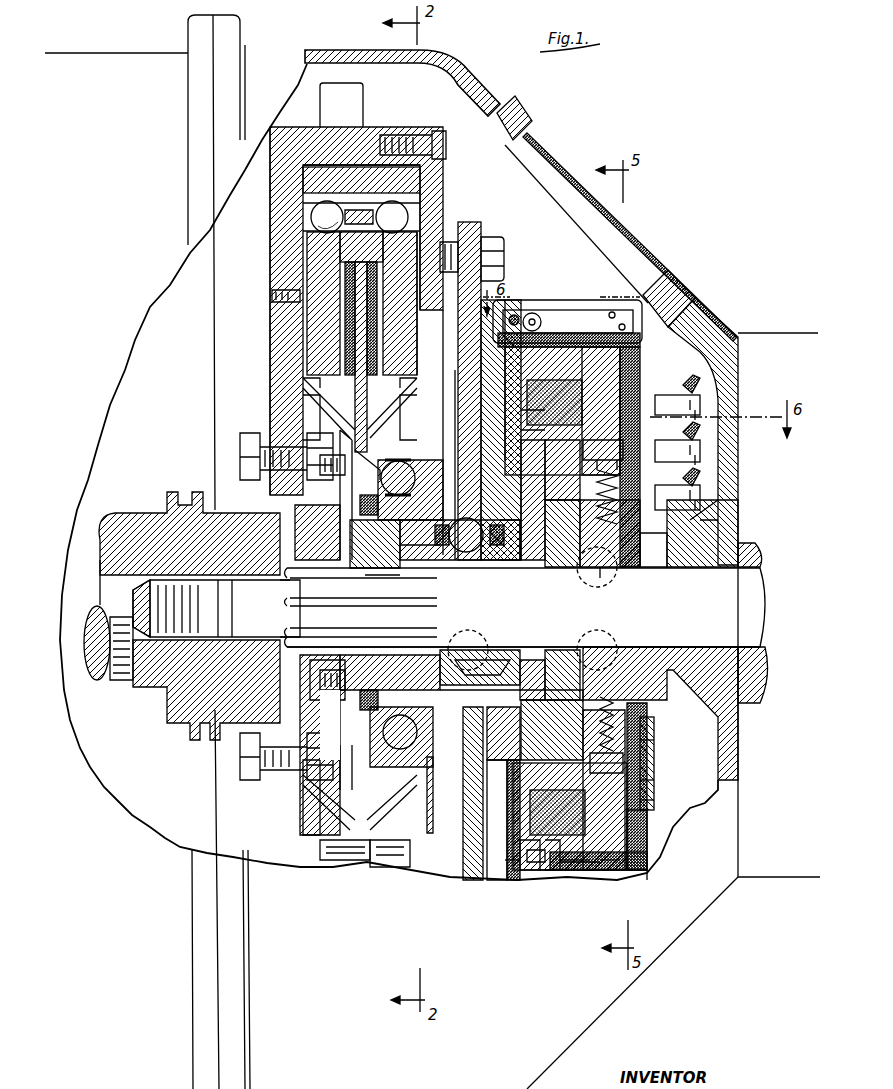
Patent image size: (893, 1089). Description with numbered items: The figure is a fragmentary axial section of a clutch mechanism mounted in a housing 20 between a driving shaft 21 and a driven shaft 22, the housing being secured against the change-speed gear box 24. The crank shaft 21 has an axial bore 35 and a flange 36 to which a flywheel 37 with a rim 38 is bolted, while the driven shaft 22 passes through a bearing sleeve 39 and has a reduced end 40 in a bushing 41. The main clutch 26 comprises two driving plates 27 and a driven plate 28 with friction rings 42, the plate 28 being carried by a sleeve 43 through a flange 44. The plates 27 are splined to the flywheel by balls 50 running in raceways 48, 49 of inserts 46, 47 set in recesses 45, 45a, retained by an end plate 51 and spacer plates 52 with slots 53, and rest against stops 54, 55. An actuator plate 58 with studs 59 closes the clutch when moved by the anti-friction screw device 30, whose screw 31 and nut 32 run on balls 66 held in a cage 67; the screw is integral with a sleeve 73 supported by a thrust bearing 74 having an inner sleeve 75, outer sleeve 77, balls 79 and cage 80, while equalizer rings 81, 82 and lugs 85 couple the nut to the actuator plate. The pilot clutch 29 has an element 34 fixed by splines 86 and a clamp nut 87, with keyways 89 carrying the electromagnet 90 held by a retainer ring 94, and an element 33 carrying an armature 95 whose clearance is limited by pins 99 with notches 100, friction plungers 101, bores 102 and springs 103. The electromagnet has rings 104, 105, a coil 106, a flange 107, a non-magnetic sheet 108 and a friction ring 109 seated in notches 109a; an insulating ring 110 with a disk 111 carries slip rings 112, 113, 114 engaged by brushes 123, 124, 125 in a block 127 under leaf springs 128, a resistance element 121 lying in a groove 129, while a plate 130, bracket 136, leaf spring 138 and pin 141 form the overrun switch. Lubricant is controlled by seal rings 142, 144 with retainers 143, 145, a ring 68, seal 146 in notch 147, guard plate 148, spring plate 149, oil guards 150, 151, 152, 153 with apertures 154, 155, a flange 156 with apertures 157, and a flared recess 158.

The housing 20 is at (510, 112).
The driving shaft 21 is at (113, 535).
The driven shaft 22 is at (740, 590).
The change-speed gear box 24 is at (800, 333).
The main clutch 26 is at (262, 340).
The driving elements 27 is at (330, 360).
The driven element 28 is at (330, 330).
The pilot clutch 29 is at (549, 888).
The anti-friction screw device 30 is at (496, 631).
The screw 31 is at (470, 552).
The nut 32 is at (515, 552).
The clutch element 33 is at (612, 560).
The clutch element 34 is at (550, 555).
The axial bore 35 is at (150, 690).
The annular peripheral flange 36 is at (265, 507).
The flywheel 37 is at (285, 190).
The rim 38 is at (383, 127).
The bearing sleeve 39 is at (762, 665).
The reduced inner end 40 is at (245, 605).
The bushing 41 is at (215, 690).
The friction rings 42 is at (335, 348).
The sleeve 43 is at (312, 563).
The flange 44 is at (320, 548).
The recesses 45 is at (320, 160).
The recesses 45a is at (312, 257).
The hardened steel insert 46 is at (420, 178).
The hardened steel insert 47 is at (340, 250).
The outer raceway 48 is at (310, 205).
The inner raceway 49 is at (315, 235).
The balls 50 is at (337, 224).
The annular plate 51 is at (443, 137).
The spacer plates 52 is at (310, 218).
The longitudinal slots 53 is at (430, 200).
The stops 54 is at (278, 295).
The stops 55 is at (500, 262).
The actuator plate 58 is at (490, 245).
The studs 59 is at (468, 240).
The balls 66 is at (478, 540).
The annular cage 67 is at (510, 660).
The ring 68 is at (440, 560).
The elongated sleeve 73 is at (468, 648).
The end-thrust bearing 74 is at (395, 860).
The inner sleeve 75 is at (350, 680).
The outer sleeve 77 is at (410, 850).
The balls 79 is at (410, 485).
The cage 80 is at (365, 465).
The equalizer ring 81 is at (465, 793).
The equalizer ring 82 is at (503, 793).
The lugs 85 is at (482, 480).
The splines 86 is at (535, 560).
The clamp nut 87 is at (603, 560).
The keyways 89 is at (512, 420).
The electromagnet 90 is at (598, 393).
The retainer ring 94 is at (516, 438).
The armature 95 is at (630, 375).
The pins 99 is at (653, 757).
The longitudinal notch 100 is at (650, 790).
The friction plungers 101 is at (653, 743).
The radial bores 102 is at (660, 693).
The compression springs 103 is at (657, 717).
The inner ring 104 is at (645, 833).
The outer ring 105 is at (540, 870).
The annular magnetic coil 106 is at (560, 870).
The outer peripheral flange 107 is at (500, 865).
The thin sheet 108 is at (528, 870).
The ring 109 is at (647, 850).
The notches 109a is at (575, 875).
The ring 110 is at (643, 873).
The annular internal disk 111 is at (645, 820).
The slip ring 112 is at (650, 800).
The slip ring 113 is at (652, 767).
The slip ring 114 is at (653, 728).
The electrical resistance element 121 is at (585, 870).
The brush contact 123 is at (700, 425).
The brush contact 124 is at (700, 462).
The brush contact 125 is at (705, 508).
The insulating block 127 is at (710, 488).
The leaf springs 128 is at (690, 405).
The annular groove 129 is at (620, 870).
The annular plate 130 is at (505, 870).
The bracket 136 is at (545, 310).
The leaf spring 138 is at (575, 305).
The pin 141 is at (522, 318).
The oil seal ring 142 is at (405, 570).
The retainer 143 is at (400, 582).
The ring 144 is at (590, 650).
The retainer 145 is at (530, 670).
The oil seal ring 146 is at (352, 500).
The annular notch 147 is at (355, 692).
The annular guard plate 148 is at (370, 702).
The spring plate 149 is at (420, 860).
The outer oil guard 150 is at (305, 408).
The outer oil guard 151 is at (345, 410).
The inner oil guard 152 is at (310, 800).
The inner oil guard 153 is at (320, 815).
The apertures 154 is at (275, 387).
The apertures 155 is at (400, 410).
The annular undercut flange 156 is at (598, 680).
The apertures 157 is at (605, 580).
The annular recess 158 is at (655, 543).